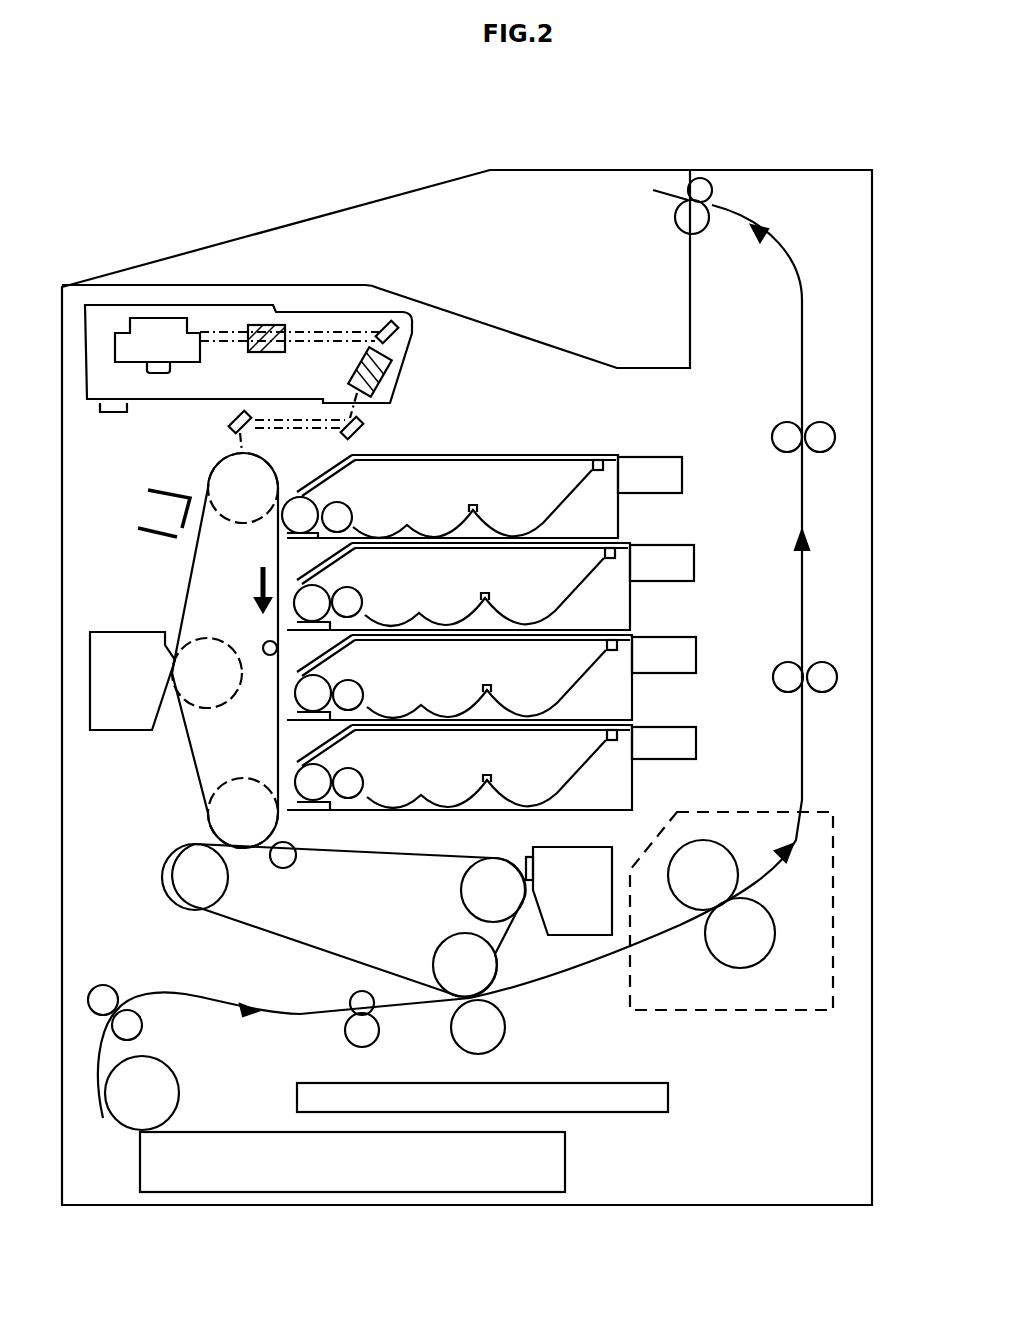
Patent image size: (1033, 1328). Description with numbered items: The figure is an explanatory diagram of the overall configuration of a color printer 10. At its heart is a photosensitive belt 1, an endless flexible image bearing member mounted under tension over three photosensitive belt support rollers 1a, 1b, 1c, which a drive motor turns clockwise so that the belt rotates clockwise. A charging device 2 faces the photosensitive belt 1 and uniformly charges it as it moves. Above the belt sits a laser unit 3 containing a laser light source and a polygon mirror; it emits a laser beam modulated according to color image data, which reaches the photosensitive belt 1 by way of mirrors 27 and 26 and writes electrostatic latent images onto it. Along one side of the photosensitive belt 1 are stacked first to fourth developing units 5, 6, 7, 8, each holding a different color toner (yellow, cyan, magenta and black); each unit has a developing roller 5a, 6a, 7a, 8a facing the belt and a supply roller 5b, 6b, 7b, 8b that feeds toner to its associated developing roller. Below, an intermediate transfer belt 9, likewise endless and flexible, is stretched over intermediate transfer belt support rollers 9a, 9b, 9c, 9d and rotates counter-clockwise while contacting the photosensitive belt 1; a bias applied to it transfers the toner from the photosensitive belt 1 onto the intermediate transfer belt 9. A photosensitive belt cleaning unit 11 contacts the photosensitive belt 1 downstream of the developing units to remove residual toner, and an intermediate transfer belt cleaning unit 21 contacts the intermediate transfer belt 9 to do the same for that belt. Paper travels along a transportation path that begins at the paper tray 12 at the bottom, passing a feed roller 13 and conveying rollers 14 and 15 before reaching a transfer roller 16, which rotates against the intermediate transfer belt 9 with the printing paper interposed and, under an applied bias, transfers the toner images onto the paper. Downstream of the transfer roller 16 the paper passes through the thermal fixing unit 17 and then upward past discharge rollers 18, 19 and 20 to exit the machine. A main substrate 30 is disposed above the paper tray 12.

The photosensitive belt 1 is at (187, 574).
The photosensitive belt support roller 1a is at (220, 516).
The photosensitive belt support roller 1b is at (217, 645).
The photosensitive belt support roller 1c is at (230, 780).
The charging device 2 is at (150, 490).
The laser unit 3 is at (413, 355).
The first developing unit 5 is at (645, 517).
The developing roller 5a is at (297, 492).
The supply roller 5b is at (345, 503).
The second developing unit 6 is at (647, 605).
The developing roller 6a is at (303, 590).
The supply roller 6b is at (353, 592).
The third developing unit 7 is at (647, 702).
The developing roller 7a is at (303, 682).
The supply roller 7b is at (353, 684).
The fourth developing unit 8 is at (647, 788).
The developing roller 8a is at (303, 772).
The supply roller 8b is at (353, 775).
The intermediate transfer belt 9 is at (240, 925).
The intermediate transfer belt support roller 9a is at (217, 883).
The intermediate transfer belt support roller 9b is at (447, 937).
The intermediate transfer belt support roller 9c is at (466, 878).
The intermediate transfer belt support roller 9d is at (290, 860).
The printer 10 is at (748, 168).
The photosensitive belt cleaning unit 11 is at (115, 730).
The paper tray 12 is at (565, 1160).
The feed roller 13 is at (175, 1098).
The conveying roller 14 is at (140, 1020).
The conveying roller 15 is at (372, 1040).
The transfer roller 16 is at (490, 1032).
The thermal fixing unit 17 is at (793, 1015).
The discharge roller 18 is at (838, 668).
The discharge roller 19 is at (840, 430).
The discharge roller 20 is at (712, 192).
The intermediate transfer belt cleaning unit 21 is at (578, 925).
The mirror 26 is at (230, 420).
The mirror 27 is at (366, 430).
The main substrate 30 is at (618, 1080).